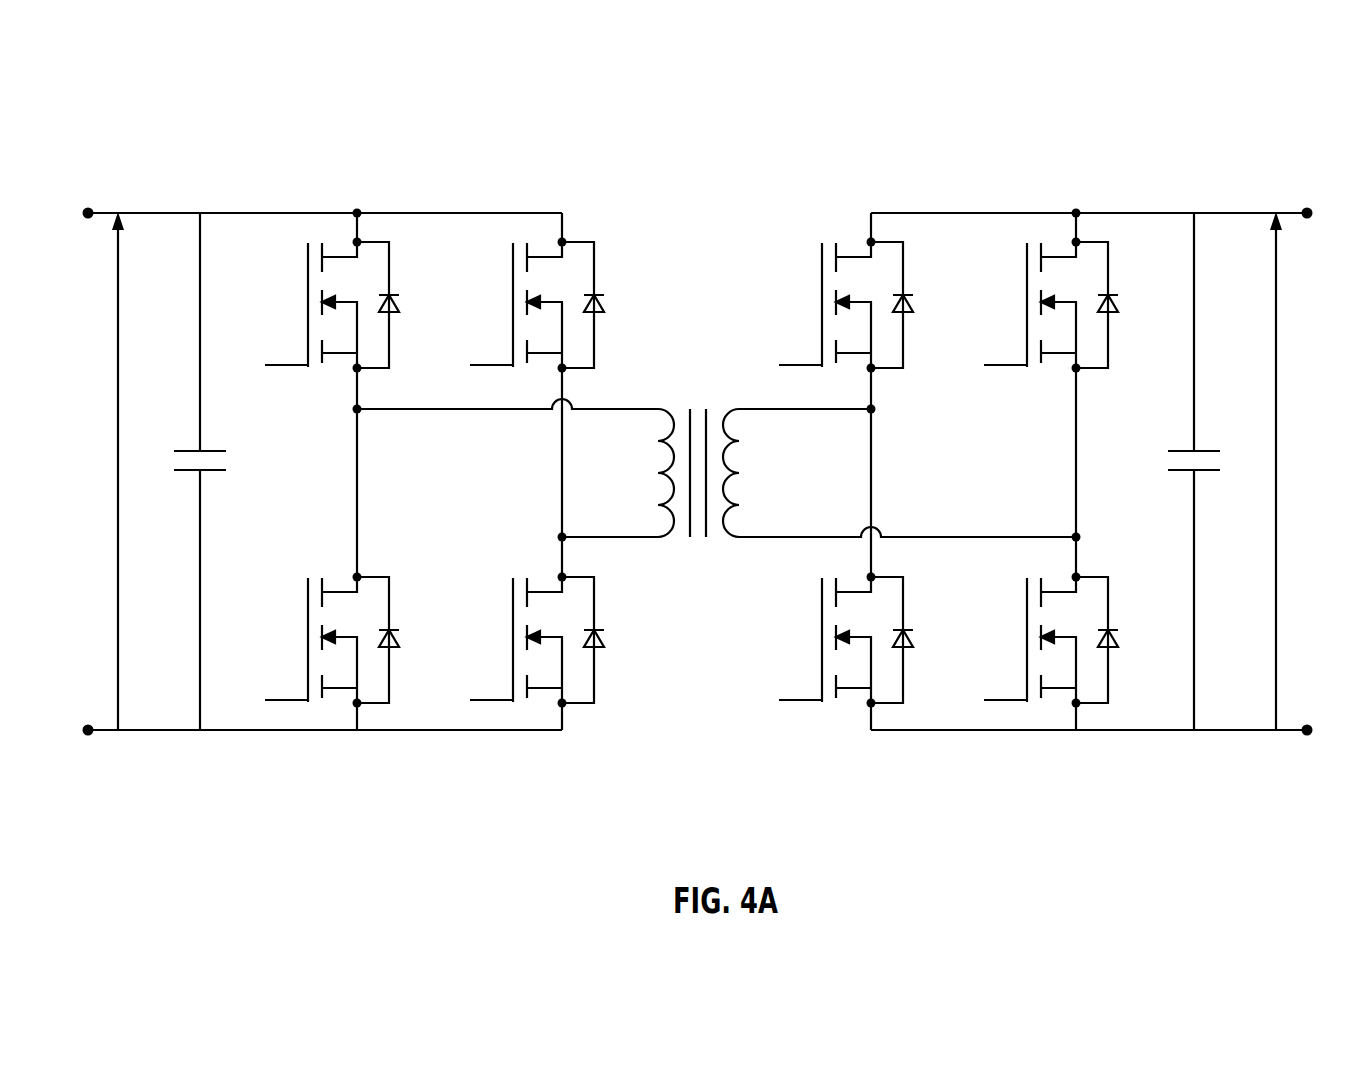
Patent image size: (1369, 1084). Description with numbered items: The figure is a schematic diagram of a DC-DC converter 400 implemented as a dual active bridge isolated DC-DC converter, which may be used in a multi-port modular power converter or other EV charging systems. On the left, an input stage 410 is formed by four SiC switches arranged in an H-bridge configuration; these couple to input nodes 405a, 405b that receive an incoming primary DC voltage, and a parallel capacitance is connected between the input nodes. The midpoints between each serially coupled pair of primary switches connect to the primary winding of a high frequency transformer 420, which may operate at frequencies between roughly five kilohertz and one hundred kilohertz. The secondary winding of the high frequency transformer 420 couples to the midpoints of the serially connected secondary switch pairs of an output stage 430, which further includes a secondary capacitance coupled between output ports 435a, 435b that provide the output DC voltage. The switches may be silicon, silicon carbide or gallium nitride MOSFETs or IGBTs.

The DC-DC converter 400 is at (120, 114).
The input node 405a is at (88, 210).
The input node 405b is at (88, 733).
The input stage 410 is at (313, 202).
The high frequency transformer 420 is at (720, 383).
The output stage 430 is at (1160, 202).
The output port 435a is at (1309, 211).
The output port 435b is at (1308, 733).